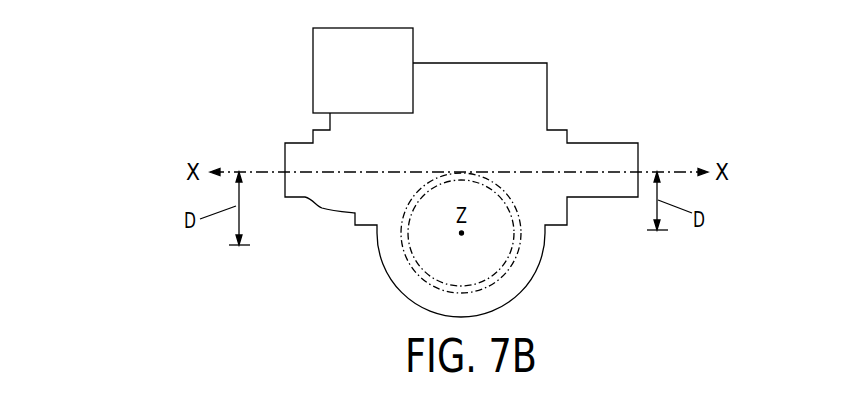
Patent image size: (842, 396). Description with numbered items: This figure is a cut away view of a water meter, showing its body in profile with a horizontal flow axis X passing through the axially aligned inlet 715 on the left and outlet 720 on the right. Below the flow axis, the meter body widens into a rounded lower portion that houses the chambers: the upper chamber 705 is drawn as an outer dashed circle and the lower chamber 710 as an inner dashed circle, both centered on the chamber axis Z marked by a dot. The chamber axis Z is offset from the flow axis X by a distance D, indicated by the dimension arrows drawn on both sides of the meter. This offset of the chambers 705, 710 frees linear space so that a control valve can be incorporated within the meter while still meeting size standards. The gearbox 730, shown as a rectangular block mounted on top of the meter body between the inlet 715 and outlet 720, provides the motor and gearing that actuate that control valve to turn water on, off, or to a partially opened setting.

The upper chamber 705 is at (518, 238).
The lower chamber 710 is at (518, 272).
The inlet 715 is at (283, 158).
The outlet 720 is at (610, 141).
The gearbox 730 is at (413, 45).